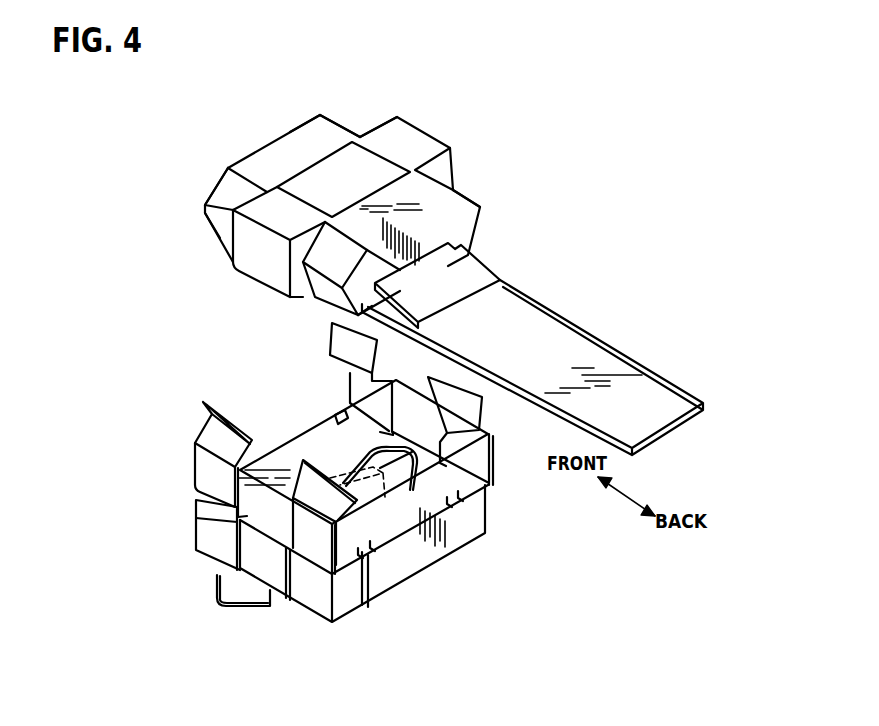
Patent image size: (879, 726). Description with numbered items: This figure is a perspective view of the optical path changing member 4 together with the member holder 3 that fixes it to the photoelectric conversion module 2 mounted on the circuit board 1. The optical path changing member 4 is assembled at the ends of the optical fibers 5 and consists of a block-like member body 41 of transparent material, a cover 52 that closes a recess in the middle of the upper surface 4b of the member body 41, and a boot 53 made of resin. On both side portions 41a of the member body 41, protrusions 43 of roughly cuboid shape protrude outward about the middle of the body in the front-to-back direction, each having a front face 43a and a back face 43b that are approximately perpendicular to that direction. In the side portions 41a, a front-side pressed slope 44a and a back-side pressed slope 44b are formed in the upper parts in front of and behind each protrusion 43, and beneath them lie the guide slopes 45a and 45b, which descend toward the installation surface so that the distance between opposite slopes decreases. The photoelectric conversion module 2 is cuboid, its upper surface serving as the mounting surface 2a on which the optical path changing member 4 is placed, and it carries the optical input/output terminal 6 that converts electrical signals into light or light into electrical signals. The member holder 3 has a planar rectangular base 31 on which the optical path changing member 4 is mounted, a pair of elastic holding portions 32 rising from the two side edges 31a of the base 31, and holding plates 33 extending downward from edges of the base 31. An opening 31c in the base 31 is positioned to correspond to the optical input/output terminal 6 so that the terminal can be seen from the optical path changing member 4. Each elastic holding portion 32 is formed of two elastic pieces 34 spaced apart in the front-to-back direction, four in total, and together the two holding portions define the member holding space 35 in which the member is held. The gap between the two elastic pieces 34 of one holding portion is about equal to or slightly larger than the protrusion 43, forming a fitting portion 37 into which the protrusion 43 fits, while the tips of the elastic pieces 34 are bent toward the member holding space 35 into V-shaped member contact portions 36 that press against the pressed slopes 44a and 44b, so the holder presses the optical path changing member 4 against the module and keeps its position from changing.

The circuit board 1 is at (516, 625).
The photoelectric conversion module 2 is at (487, 508).
The mounting surface 2a is at (403, 475).
The member holder 3 is at (182, 398).
The optical path changing member 4 is at (500, 160).
The top surface of core 4b is at (306, 128).
The optical fibers 5 is at (645, 360).
The optical input/output terminal 6 is at (385, 492).
The base 31 is at (357, 563).
The side edges 31a is at (298, 567).
The opening 31c is at (280, 520).
The elastic holding portions 32 is at (633, 323).
The holding plates 33 is at (243, 555).
The elastic pieces 34 is at (440, 340).
The member holding space 35 is at (335, 418).
The member contact portions 36 is at (332, 370).
The fitting portion 37 is at (282, 447).
The member body 41 is at (322, 120).
The side portions 41a is at (348, 124).
The protrusions 43 is at (410, 143).
The front face 43a is at (383, 127).
The back face 43b is at (445, 167).
The front-side pressed slope 44a is at (205, 205).
The back-side pressed slope 44b is at (318, 262).
The guide slopes 45a is at (210, 228).
The guide slopes 45b is at (335, 305).
The cover 52 is at (300, 162).
The boot 53 is at (490, 270).